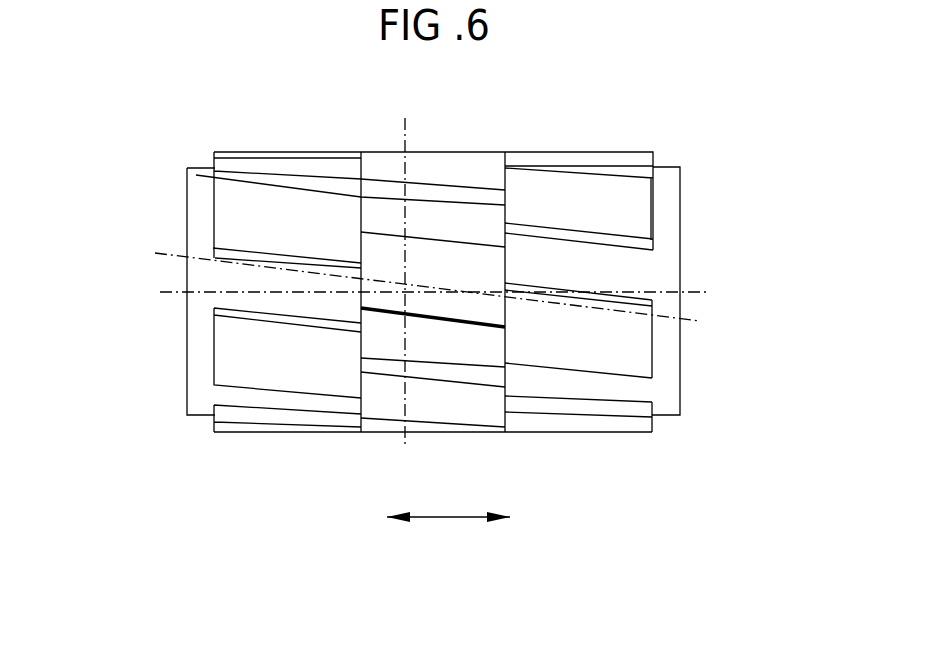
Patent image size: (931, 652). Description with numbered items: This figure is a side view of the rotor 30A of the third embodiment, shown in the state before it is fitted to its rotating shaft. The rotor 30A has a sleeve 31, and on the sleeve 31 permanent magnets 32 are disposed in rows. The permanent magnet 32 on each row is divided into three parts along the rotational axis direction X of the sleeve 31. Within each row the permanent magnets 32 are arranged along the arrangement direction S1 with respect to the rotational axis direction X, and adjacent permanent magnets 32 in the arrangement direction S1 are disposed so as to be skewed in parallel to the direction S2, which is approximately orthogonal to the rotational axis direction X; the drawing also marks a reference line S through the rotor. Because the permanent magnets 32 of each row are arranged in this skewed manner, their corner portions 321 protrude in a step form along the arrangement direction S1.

The rotor 30A is at (451, 265).
The sleeve 31 is at (682, 190).
The permanent magnet 32 is at (258, 189).
The corner portion 321 is at (196, 176).
The reference plane S is at (178, 293).
The arrangement direction S1 is at (180, 257).
The direction approximately orthogonal to the rotational axis direction S2 is at (408, 136).
The rotational axis direction X is at (448, 518).